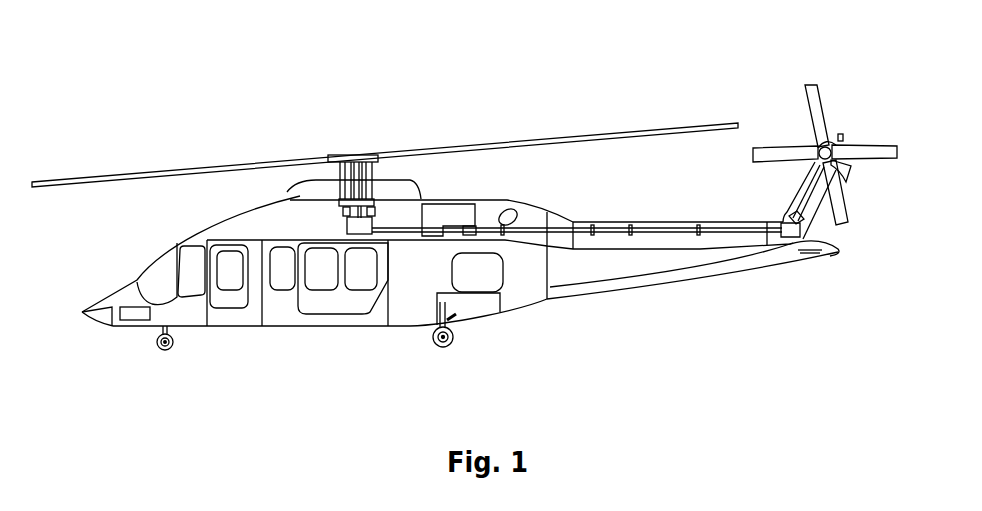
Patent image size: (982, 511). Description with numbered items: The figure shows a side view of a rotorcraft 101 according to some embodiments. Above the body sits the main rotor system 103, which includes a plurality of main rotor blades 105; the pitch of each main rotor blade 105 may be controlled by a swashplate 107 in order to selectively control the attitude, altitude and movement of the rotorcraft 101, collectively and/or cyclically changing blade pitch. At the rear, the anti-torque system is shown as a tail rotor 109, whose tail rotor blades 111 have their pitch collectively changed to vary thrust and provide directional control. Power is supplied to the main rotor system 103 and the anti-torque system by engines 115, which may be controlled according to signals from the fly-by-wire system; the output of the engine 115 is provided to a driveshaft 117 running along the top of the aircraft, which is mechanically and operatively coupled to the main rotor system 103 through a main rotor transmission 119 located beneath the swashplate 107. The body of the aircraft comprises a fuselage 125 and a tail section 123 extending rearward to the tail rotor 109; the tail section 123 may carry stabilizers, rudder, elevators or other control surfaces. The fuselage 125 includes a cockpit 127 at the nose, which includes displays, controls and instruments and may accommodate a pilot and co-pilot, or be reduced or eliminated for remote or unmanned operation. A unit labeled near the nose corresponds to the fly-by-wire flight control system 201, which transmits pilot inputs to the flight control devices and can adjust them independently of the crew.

The rotorcraft 101 is at (236, 39).
The main rotor system 103 is at (380, 124).
The main rotor blade 105 is at (625, 132).
The swashplate 107 is at (375, 197).
The tail rotor 109 is at (833, 53).
The tail rotor blade 111 is at (889, 141).
The engine 115 is at (465, 203).
The driveshaft 117 is at (403, 234).
The main rotor transmission 119 is at (347, 219).
The tail section 123 is at (673, 279).
The fuselage 125 is at (308, 323).
The cockpit 127 is at (145, 267).
The fly-by-wire flight control system 201 is at (122, 315).